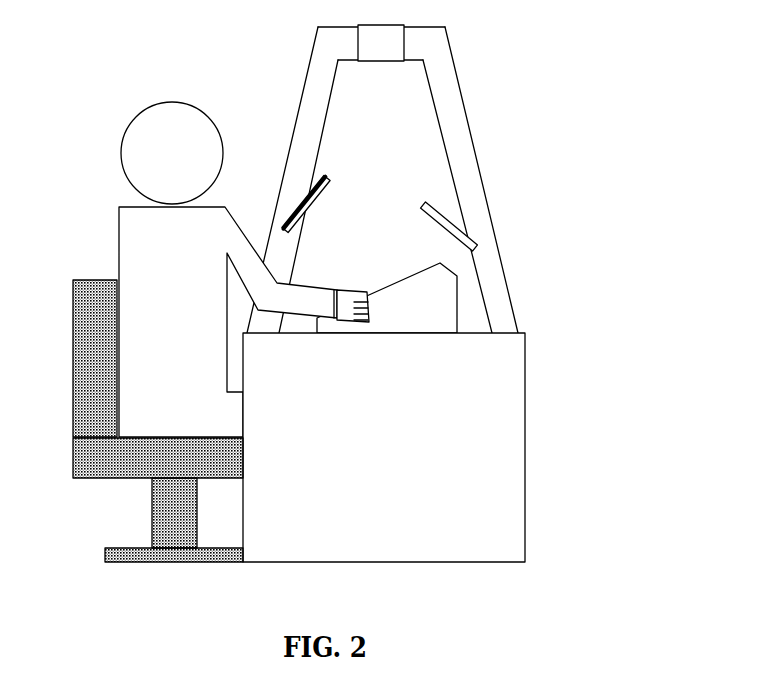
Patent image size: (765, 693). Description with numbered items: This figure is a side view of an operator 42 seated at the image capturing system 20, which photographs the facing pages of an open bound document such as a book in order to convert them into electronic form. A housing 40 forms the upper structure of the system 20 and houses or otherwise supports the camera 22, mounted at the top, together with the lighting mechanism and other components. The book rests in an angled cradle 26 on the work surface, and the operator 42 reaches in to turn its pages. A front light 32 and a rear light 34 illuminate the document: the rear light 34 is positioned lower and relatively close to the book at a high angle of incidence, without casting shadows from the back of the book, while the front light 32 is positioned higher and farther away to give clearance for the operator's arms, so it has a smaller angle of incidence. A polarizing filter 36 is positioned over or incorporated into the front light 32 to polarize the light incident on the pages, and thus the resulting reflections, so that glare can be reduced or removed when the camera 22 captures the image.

The image capturing system 20 is at (422, 180).
The camera 22 is at (393, 54).
The angled cradle 26 is at (391, 283).
The front light 32 is at (327, 176).
The rear light 34 is at (424, 203).
The polarizing filter 36 is at (333, 185).
The housing 40 is at (492, 213).
The operator 42 is at (96, 251).